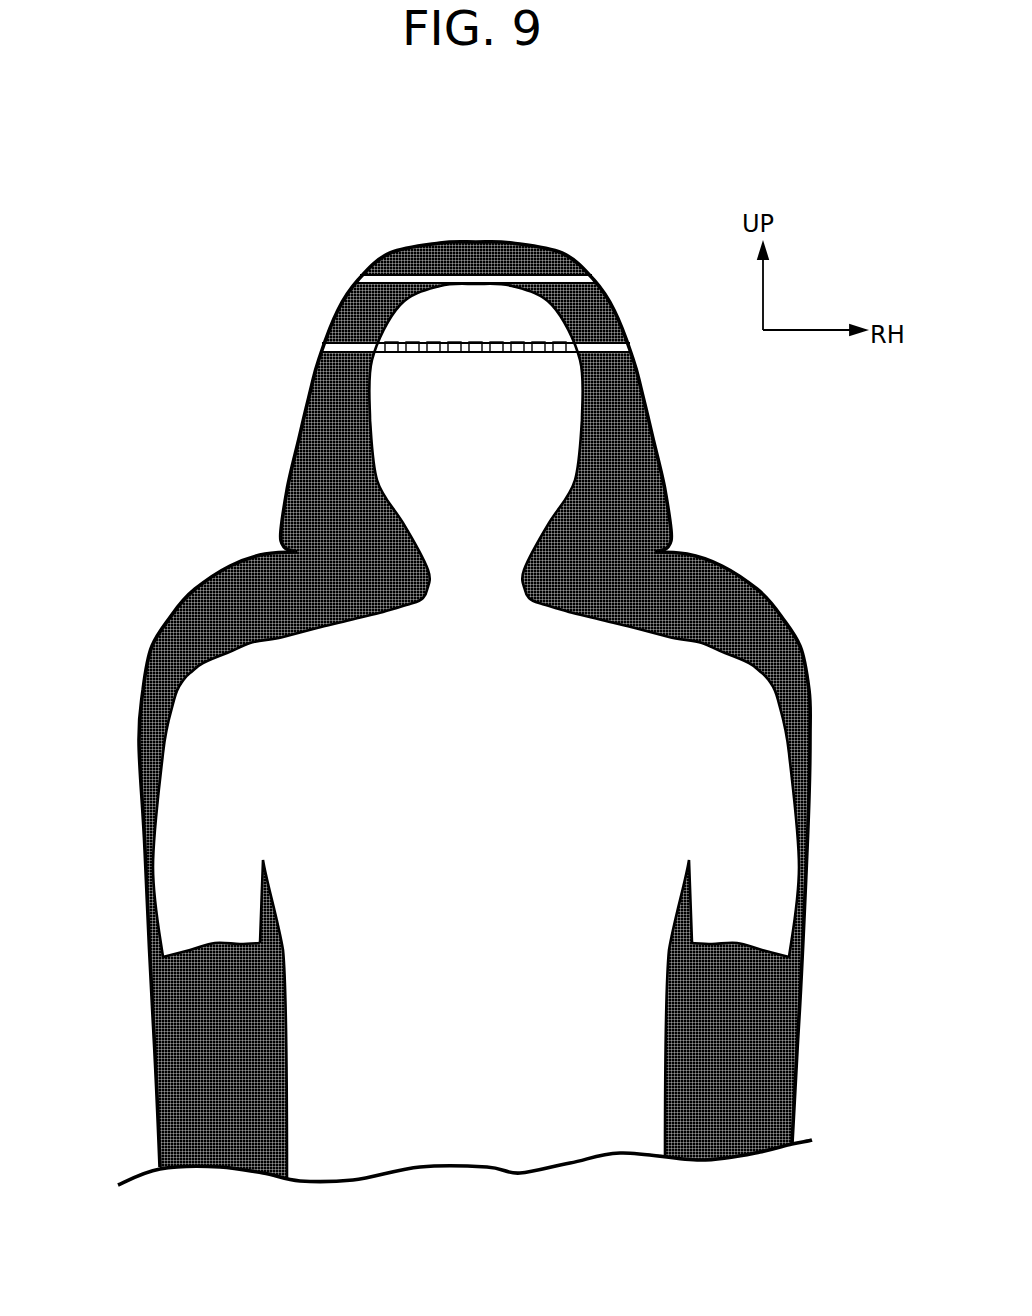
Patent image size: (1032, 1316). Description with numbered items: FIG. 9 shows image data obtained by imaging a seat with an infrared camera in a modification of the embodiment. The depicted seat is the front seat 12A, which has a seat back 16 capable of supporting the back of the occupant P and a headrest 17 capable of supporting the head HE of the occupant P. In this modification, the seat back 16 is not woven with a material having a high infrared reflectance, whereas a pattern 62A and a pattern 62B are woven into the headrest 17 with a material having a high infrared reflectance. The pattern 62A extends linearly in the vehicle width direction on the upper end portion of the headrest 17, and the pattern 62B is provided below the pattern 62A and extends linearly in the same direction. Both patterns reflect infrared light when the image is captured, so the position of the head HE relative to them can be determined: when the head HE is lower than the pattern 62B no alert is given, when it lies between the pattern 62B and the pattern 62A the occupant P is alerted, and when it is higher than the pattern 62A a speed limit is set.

The headrest 17 is at (541, 246).
The pattern 62A is at (398, 277).
The pattern 62B is at (353, 343).
The head HE is at (585, 430).
The front seat 12A is at (736, 572).
The occupant P is at (767, 668).
The seat back 16 is at (140, 743).